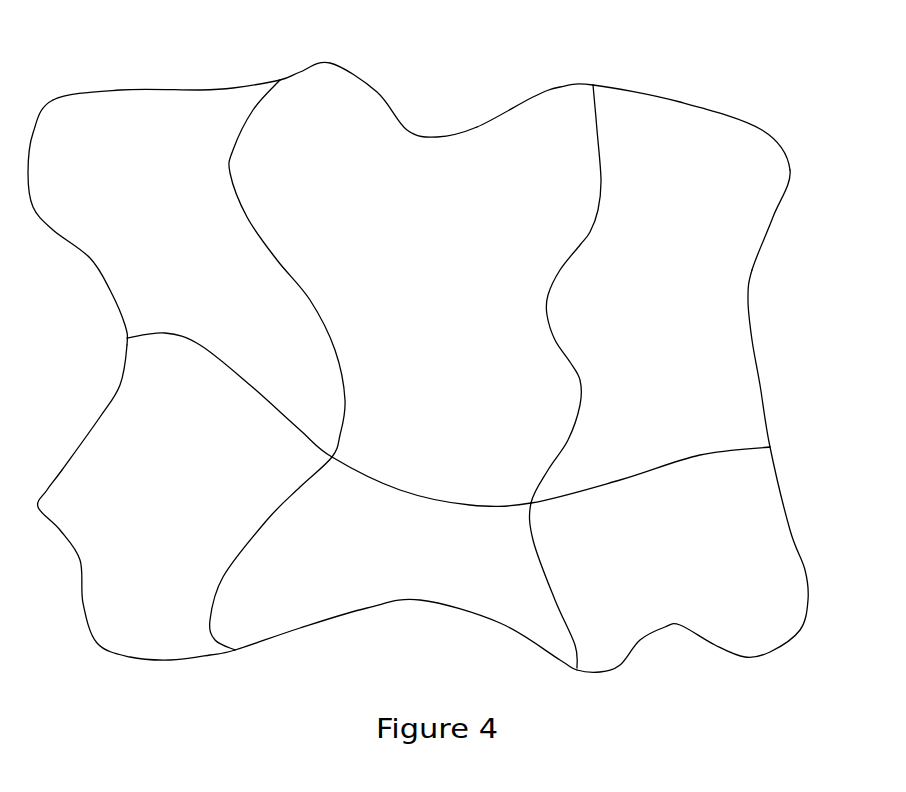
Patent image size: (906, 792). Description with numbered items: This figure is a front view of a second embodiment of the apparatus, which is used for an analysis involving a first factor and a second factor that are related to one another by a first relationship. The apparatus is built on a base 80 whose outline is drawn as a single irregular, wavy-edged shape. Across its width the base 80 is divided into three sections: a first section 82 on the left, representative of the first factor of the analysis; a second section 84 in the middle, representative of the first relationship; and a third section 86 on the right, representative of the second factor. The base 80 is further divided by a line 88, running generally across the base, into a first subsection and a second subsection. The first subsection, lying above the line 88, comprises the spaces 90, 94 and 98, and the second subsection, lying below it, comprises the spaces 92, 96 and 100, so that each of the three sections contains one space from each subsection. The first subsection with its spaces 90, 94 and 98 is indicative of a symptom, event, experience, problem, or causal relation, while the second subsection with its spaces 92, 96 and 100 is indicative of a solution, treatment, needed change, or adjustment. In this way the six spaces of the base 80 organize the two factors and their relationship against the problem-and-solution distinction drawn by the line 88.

The base 80 is at (702, 82).
The first section 82 is at (140, 90).
The second section 84 is at (377, 92).
The third section 86 is at (762, 130).
The line 88 is at (710, 448).
The space 90 is at (180, 278).
The space 92 is at (185, 502).
The space 94 is at (411, 293).
The space 96 is at (406, 586).
The space 98 is at (660, 294).
The space 100 is at (669, 559).